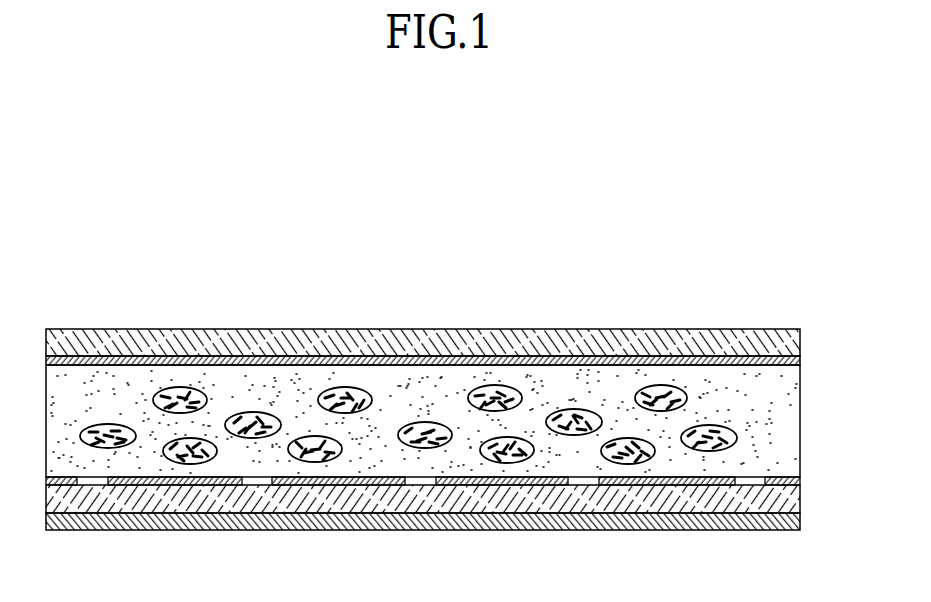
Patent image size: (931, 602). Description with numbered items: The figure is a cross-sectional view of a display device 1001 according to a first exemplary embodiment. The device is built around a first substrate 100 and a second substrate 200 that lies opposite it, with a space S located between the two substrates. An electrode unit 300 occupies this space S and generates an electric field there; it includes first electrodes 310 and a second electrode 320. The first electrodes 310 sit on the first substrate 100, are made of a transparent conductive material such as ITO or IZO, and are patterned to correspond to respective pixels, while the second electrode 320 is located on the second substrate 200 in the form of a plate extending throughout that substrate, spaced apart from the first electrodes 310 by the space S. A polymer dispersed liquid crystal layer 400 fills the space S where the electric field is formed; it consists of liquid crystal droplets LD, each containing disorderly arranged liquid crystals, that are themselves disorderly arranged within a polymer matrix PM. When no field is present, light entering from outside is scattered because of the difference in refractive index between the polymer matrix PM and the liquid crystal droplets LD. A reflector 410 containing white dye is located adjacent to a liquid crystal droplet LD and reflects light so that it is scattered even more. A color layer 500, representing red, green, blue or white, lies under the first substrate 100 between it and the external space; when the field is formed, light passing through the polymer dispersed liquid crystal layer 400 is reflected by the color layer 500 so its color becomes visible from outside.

The display device 1001 is at (421, 248).
The first substrate 100 is at (203, 503).
The second substrate 200 is at (202, 337).
The electrode unit 300 is at (150, 277).
The first electrodes 310 is at (118, 480).
The second electrode 320 is at (82, 362).
The polymer dispersed liquid crystal layer 400 is at (447, 375).
The reflector 410 is at (671, 386).
The color layer 500 is at (340, 523).
The liquid crystal droplet LD is at (734, 432).
The polymer matrix PM is at (777, 450).
The space S is at (566, 451).